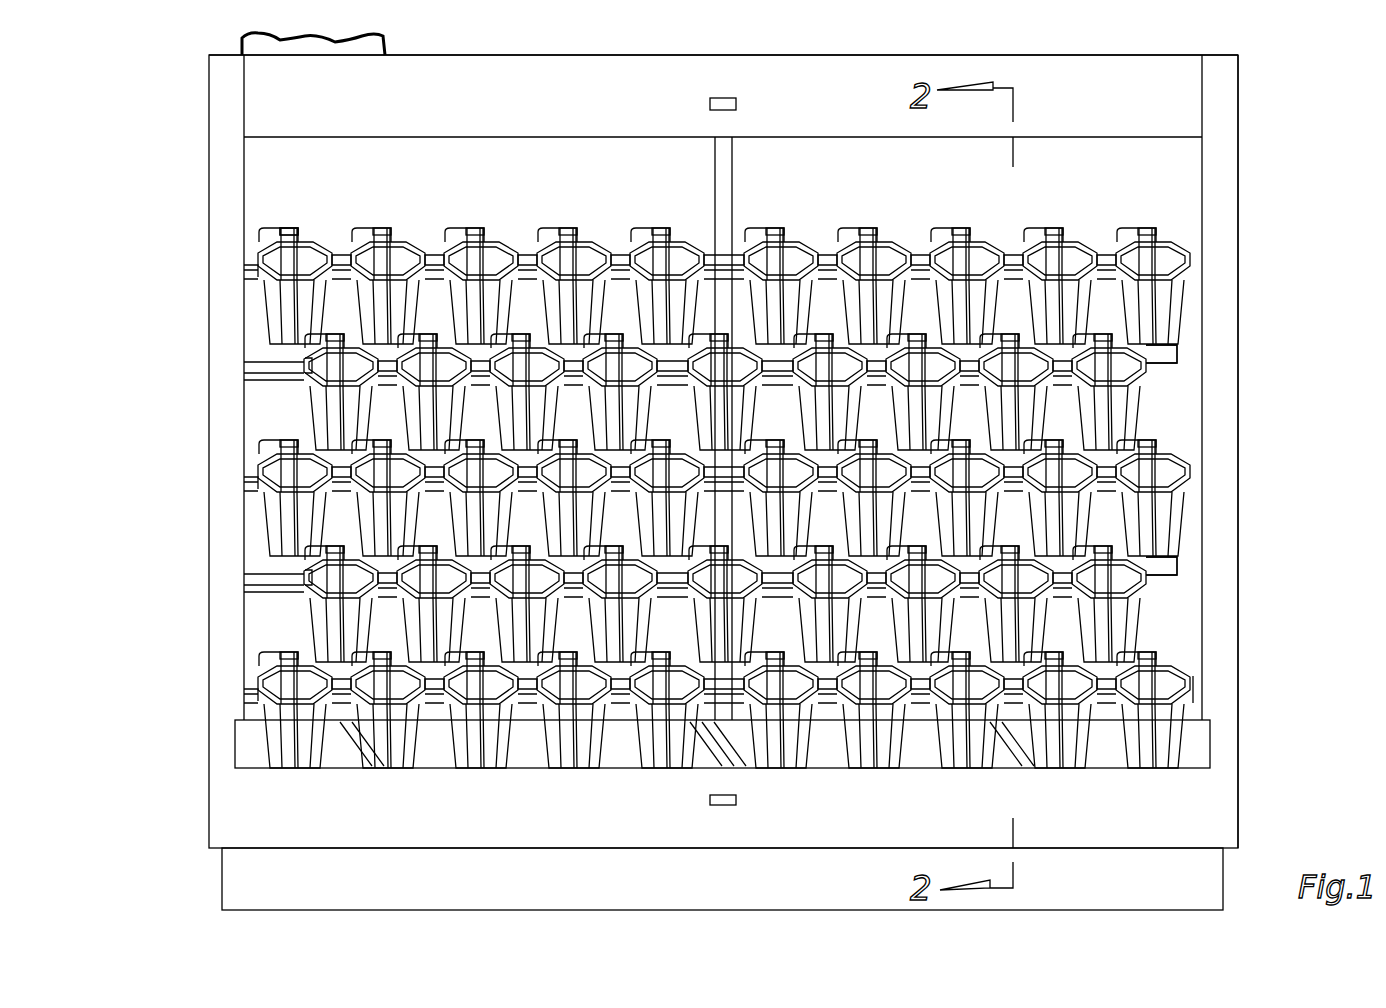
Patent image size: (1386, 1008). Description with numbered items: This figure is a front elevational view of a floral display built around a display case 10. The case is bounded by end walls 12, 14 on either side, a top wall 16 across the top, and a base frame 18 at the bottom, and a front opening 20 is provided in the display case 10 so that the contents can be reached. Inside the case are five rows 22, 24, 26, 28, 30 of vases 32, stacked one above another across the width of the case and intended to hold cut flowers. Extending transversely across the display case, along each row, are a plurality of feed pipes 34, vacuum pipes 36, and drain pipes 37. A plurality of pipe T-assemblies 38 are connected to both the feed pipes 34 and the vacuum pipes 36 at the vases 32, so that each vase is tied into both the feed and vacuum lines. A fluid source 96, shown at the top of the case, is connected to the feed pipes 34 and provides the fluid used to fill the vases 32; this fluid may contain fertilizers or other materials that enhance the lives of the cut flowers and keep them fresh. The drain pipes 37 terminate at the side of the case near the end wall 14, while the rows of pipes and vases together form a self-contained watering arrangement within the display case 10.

The display case 10 is at (163, 71).
The end wall 12 is at (212, 163).
The end wall 14 is at (1240, 428).
The top wall 16 is at (574, 42).
The base frame 18 is at (222, 880).
The front opening 20 is at (1152, 170).
The row of vases 22 is at (238, 287).
The row of vases 24 is at (272, 398).
The row of vases 26 is at (235, 508).
The row of vases 28 is at (278, 613).
The row of vases 30 is at (233, 708).
The vase 32 is at (330, 237).
The feed pipe 34 is at (246, 262).
The vacuum pipe 36 is at (252, 365).
The drain pipe 37 is at (1178, 355).
The pipe T-assembly 38 is at (358, 230).
The fluid source 96 is at (392, 46).